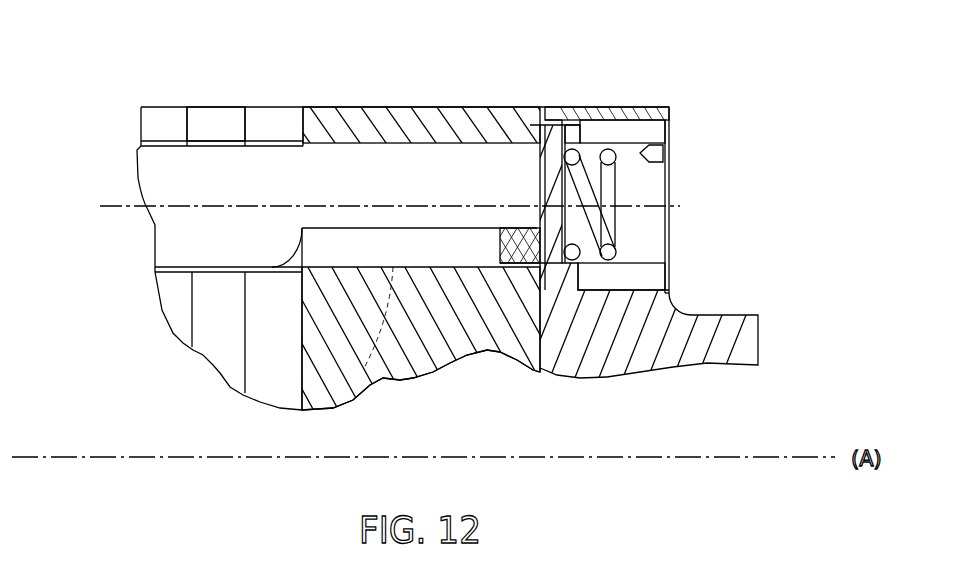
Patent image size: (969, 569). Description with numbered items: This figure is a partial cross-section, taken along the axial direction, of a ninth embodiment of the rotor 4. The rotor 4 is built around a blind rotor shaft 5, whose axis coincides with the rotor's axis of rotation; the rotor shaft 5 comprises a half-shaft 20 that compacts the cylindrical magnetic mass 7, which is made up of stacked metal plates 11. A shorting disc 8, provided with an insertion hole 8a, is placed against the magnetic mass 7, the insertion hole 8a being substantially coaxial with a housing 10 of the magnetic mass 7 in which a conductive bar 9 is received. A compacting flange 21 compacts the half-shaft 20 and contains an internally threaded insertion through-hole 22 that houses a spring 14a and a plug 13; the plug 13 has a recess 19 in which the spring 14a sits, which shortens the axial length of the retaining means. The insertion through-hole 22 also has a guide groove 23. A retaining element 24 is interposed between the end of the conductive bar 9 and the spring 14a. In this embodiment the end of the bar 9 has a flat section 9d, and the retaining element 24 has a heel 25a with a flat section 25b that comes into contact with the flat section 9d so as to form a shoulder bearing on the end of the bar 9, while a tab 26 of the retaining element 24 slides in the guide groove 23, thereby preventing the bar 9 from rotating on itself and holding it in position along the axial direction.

The rotor 4 is at (235, 98).
The rotor shaft 5 is at (778, 338).
The magnetic mass 7 is at (161, 98).
The shorting disc 8 is at (378, 107).
The insertion hole 8a is at (370, 400).
The conductive bar 9 is at (167, 183).
The flat section 9d is at (424, 228).
The housing 10 is at (141, 125).
The metal plate 11 is at (205, 110).
The plug 13 is at (673, 140).
The spring 14a is at (669, 172).
The recess 19 is at (669, 107).
The half-shaft 20 is at (729, 315).
The flange 21 is at (623, 107).
The insertion through-hole 22 is at (647, 235).
The guide groove 23 is at (552, 120).
The retaining element 24 is at (557, 377).
The heel 25a is at (513, 367).
The flat section 25b is at (500, 257).
The tab 26 is at (550, 123).